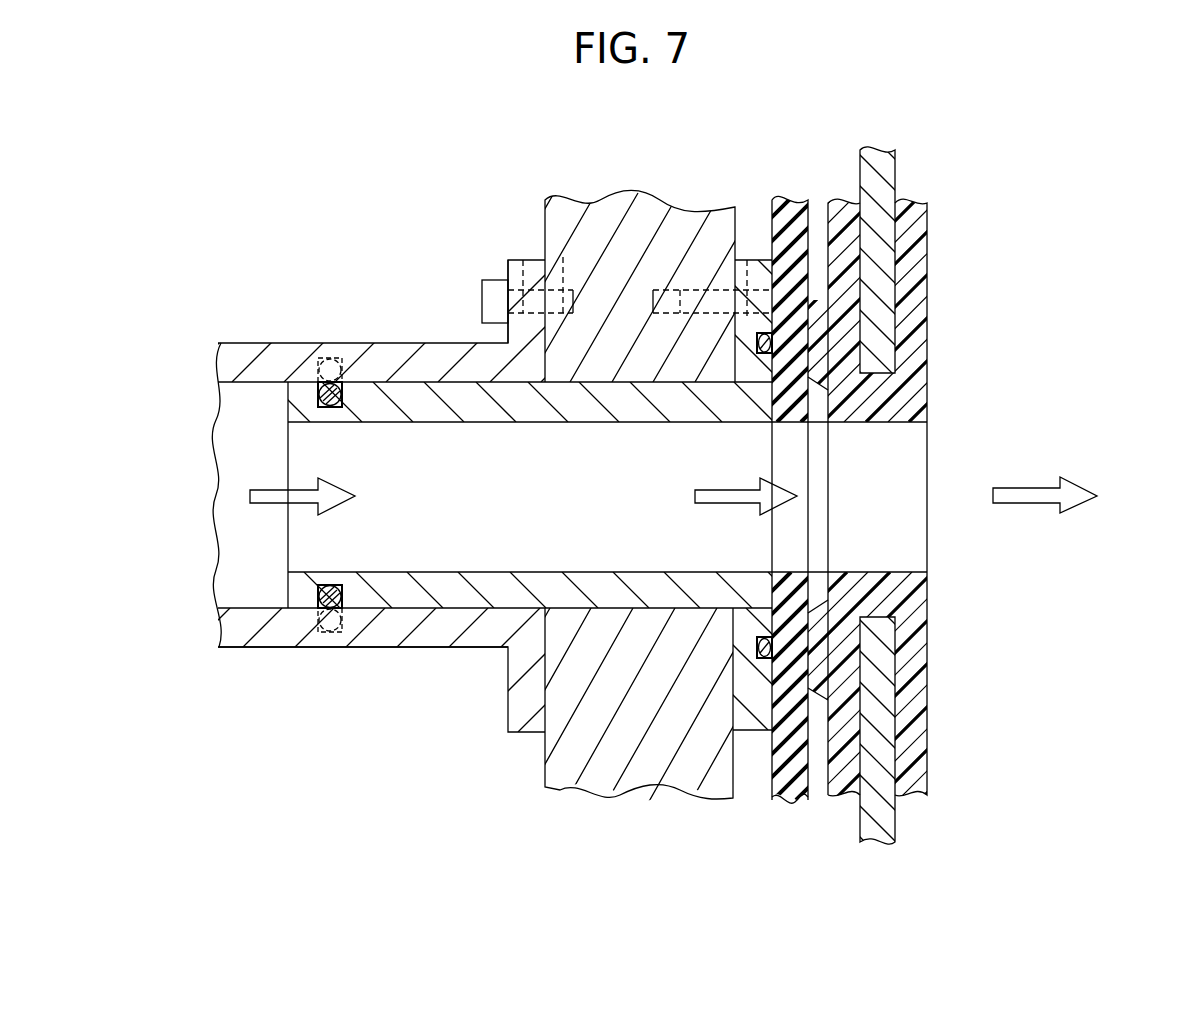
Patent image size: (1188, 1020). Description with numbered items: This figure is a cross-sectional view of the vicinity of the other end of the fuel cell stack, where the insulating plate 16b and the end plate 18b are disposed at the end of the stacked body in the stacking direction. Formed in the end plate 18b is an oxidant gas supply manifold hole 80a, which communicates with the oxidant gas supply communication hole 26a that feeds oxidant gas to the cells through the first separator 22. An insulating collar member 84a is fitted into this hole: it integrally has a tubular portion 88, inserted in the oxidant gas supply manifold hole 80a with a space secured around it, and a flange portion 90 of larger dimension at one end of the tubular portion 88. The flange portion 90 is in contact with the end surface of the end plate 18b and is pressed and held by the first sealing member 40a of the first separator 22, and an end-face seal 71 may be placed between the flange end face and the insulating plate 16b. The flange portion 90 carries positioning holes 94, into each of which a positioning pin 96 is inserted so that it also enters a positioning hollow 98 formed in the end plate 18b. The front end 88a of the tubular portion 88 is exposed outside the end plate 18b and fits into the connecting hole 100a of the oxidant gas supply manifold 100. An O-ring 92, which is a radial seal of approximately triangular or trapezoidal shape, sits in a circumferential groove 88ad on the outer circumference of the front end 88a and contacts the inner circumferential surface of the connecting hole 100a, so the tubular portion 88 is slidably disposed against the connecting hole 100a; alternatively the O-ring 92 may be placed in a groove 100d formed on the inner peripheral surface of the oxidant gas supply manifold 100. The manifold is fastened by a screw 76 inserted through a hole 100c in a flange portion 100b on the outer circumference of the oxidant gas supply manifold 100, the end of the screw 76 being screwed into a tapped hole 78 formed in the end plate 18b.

The insulating plate 16b is at (800, 802).
The end plate 18b is at (570, 190).
The first separator 22 is at (930, 625).
The oxidant gas supply communication hole 26a is at (903, 455).
The first sealing member 40a is at (822, 315).
The end-face seal 71 is at (757, 646).
The screw 76 is at (482, 297).
The tapped hole 78 is at (561, 255).
The oxidant gas supply manifold hole 80a is at (597, 592).
The insulating collar member 84a is at (776, 357).
The tubular portion 88 is at (464, 612).
The front end 88a is at (393, 598).
The circumferential groove 88ad is at (318, 597).
The flange portion 90 is at (750, 710).
The O-ring 92 is at (322, 345).
The positioning hole 94 is at (749, 257).
The positioning pin 96 is at (653, 291).
The positioning hollow 98 is at (682, 290).
The oxidant gas supply manifold 100 is at (266, 338).
The connecting hole 100a is at (418, 395).
The flange portion 100b is at (508, 268).
The hole 100c is at (523, 260).
The groove 100d is at (312, 622).